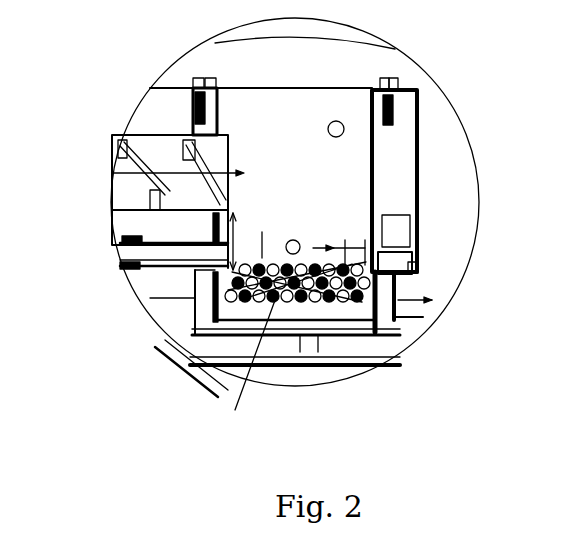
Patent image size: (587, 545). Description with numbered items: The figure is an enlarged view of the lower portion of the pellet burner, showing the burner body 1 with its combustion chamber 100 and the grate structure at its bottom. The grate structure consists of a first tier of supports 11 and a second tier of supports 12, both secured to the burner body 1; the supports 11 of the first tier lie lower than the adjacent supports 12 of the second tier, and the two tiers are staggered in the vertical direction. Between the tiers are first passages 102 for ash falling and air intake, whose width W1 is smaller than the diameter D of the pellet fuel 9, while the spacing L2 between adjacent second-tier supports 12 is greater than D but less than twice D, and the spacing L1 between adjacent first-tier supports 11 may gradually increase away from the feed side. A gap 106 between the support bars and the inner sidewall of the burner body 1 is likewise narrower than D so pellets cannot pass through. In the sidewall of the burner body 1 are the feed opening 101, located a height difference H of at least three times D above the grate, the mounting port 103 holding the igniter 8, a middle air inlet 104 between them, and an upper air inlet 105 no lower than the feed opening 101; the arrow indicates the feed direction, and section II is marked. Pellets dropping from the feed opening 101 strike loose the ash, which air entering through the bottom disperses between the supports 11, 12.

The burner body 1 is at (377, 150).
The igniter 8 is at (167, 252).
The pellet fuel 9 is at (400, 290).
The first tier of supports 11 is at (250, 286).
The second tier of supports 12 is at (340, 292).
The combustion chamber 100 is at (303, 215).
The feed opening 101 is at (210, 133).
The first passages 102 is at (322, 300).
The mounting port 103 is at (195, 283).
The middle air inlet 104 is at (286, 243).
The upper air inlet 105 is at (340, 122).
The gap 106 is at (405, 302).
The height difference H is at (247, 233).
The diameter of the pellet fuel D is at (268, 248).
The spacing between two adjacent supports in the first tier L1 is at (304, 345).
The spacing between two adjacent supports in the second tier L2 is at (339, 241).
The width of the first passage W1 is at (191, 373).
The section II is at (240, 362).